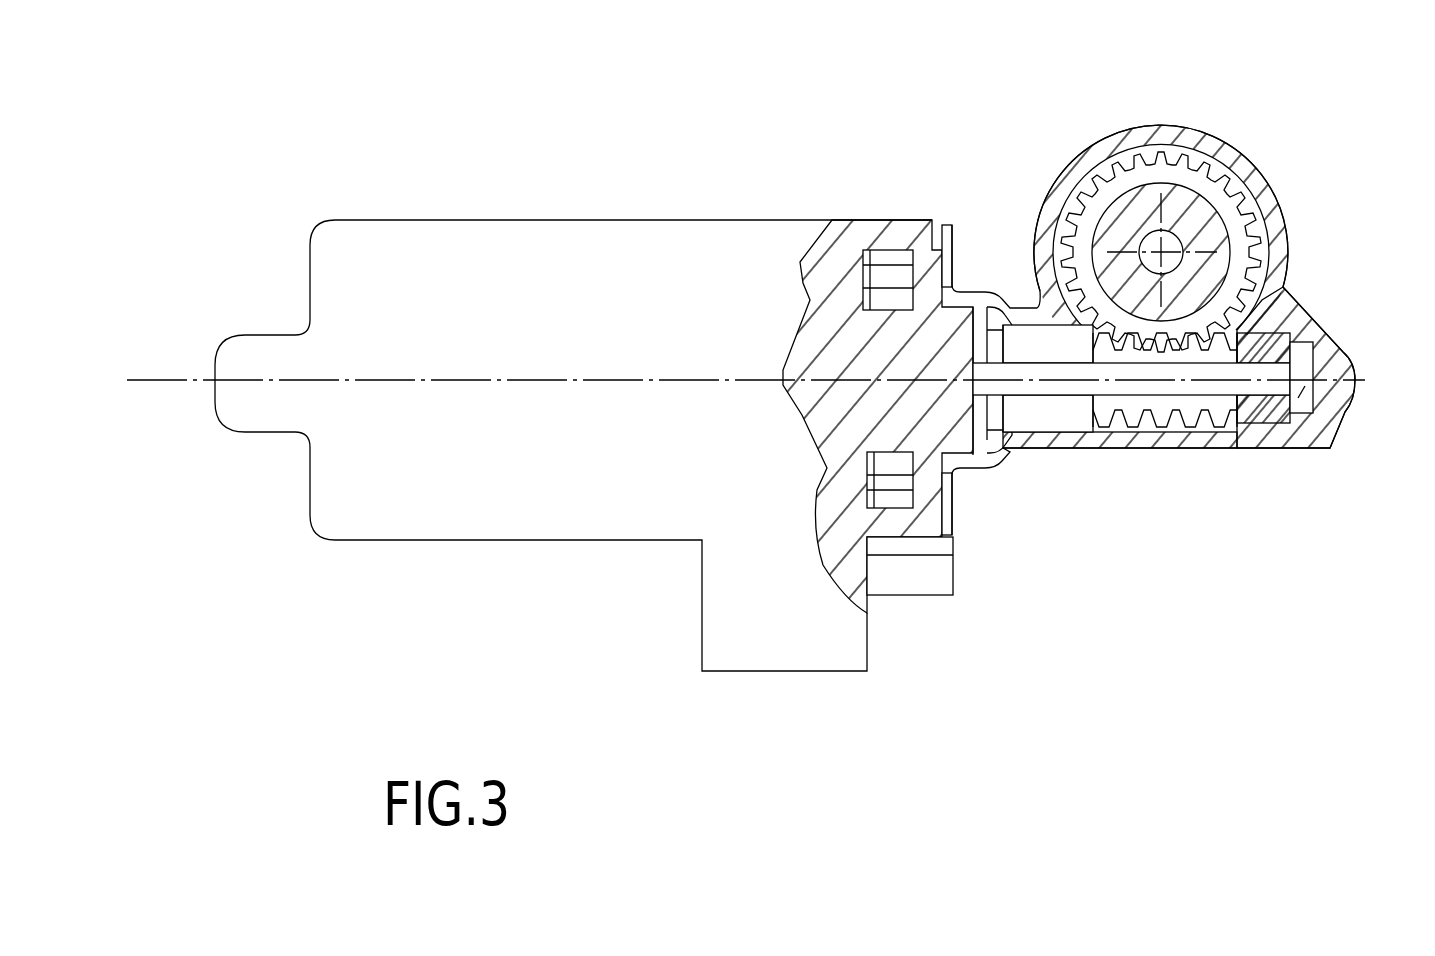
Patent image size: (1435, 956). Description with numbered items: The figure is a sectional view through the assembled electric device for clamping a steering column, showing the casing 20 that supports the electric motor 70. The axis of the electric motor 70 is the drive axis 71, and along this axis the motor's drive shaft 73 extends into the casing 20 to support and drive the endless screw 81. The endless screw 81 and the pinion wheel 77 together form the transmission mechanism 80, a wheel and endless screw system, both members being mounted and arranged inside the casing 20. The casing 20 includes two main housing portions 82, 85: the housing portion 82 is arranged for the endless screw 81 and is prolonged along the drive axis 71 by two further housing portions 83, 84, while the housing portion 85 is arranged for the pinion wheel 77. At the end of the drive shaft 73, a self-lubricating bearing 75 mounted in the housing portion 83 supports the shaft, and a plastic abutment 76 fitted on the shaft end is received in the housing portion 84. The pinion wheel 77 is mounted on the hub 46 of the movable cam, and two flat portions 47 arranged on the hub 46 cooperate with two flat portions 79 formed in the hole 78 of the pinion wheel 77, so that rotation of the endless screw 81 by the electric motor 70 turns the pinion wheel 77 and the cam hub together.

The casing 20 is at (1034, 182).
The hub 46 is at (1255, 207).
The flat portions 47 is at (1245, 228).
The electric motor 70 is at (536, 208).
The drive axis 71 is at (168, 380).
The drive shaft 73 is at (1043, 400).
The self-lubricating bearing 75 is at (1245, 352).
The plastic abutment 76 is at (1305, 392).
The pinion wheel 77 is at (1160, 125).
The hole 78 is at (1222, 165).
The flat portions 79 is at (1132, 142).
The transmission mechanism 80 is at (1274, 162).
The endless screw 81 is at (1163, 435).
The housing portion 82 is at (1058, 417).
The housing portion 83 is at (1270, 423).
The housing portion 84 is at (1297, 443).
The housing portion 85 is at (1072, 168).